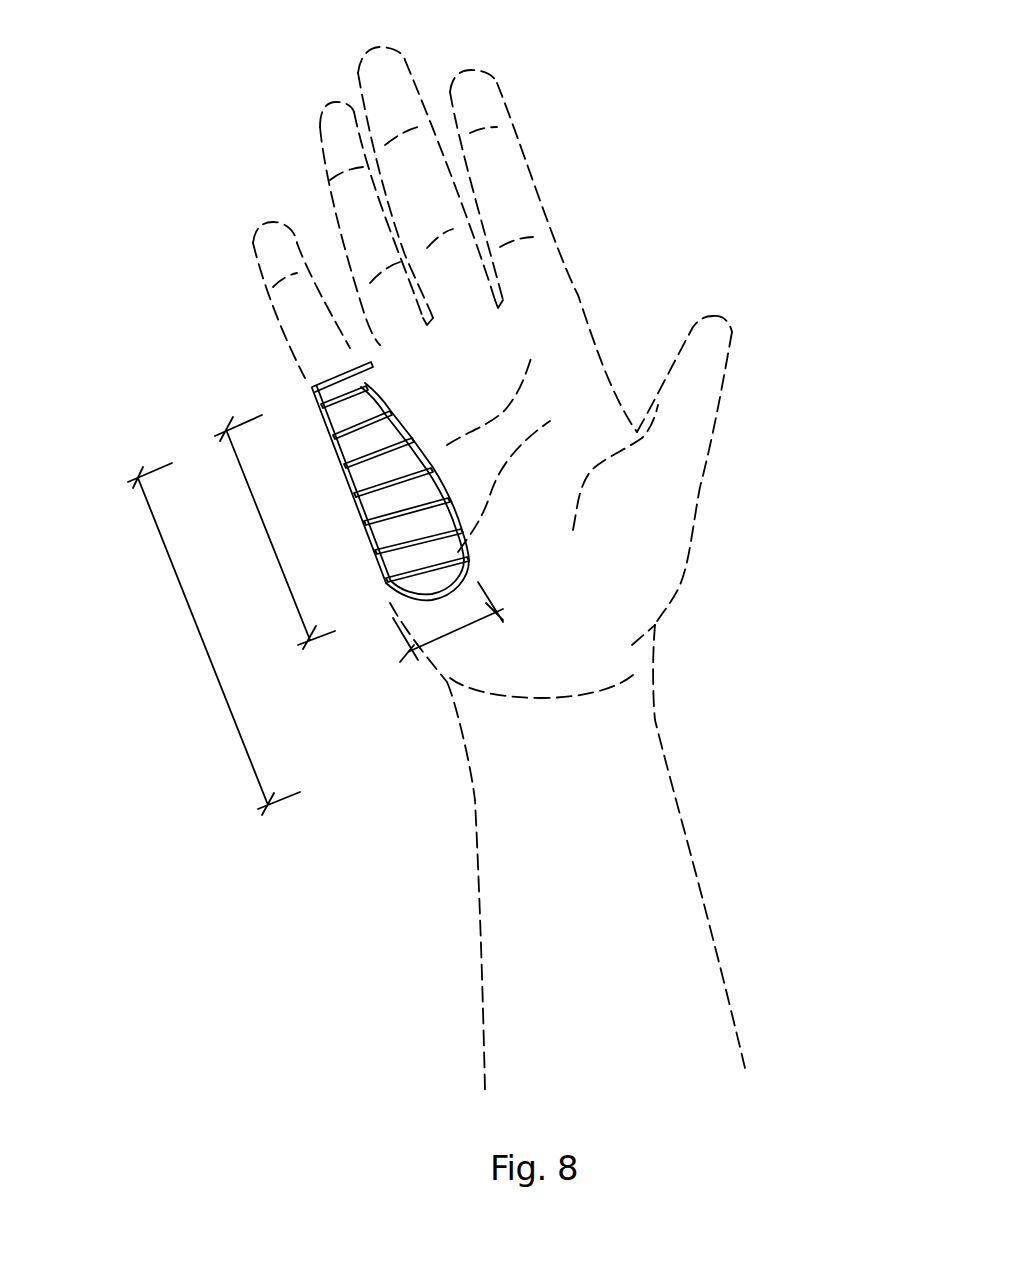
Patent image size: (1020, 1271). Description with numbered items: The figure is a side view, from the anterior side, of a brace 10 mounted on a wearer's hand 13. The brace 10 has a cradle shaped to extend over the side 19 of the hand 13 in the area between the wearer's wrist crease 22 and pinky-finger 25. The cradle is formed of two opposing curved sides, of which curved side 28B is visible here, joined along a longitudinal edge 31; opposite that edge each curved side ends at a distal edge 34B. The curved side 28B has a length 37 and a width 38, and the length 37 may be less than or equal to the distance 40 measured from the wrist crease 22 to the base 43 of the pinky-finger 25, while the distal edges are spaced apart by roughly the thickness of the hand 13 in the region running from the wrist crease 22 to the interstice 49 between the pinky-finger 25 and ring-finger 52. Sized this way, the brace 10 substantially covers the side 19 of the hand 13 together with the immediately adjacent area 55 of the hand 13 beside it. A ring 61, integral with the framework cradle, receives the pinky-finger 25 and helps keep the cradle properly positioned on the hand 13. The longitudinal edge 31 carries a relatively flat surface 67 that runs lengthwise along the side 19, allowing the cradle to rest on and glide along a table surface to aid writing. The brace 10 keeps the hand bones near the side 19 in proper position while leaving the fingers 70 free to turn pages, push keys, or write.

The brace 10 is at (383, 440).
The hand 13 is at (548, 344).
The side of the hand 19 is at (435, 663).
The wrist crease 22 is at (603, 683).
The pinky-finger 25 is at (255, 270).
The curved side 28B is at (385, 443).
The longitudinal edge 31 is at (343, 466).
The distal edge 34B is at (445, 512).
The length 37 is at (265, 532).
The width 38 is at (455, 631).
The distance 40 is at (232, 712).
The base of the pinky-finger 43 is at (373, 362).
The interstice 49 is at (368, 352).
The ring-finger 52 is at (322, 140).
The immediately adjacent area 55 is at (424, 486).
The ring 61 is at (323, 377).
The relatively flat surface 67 is at (312, 428).
The fingers 70 is at (560, 176).